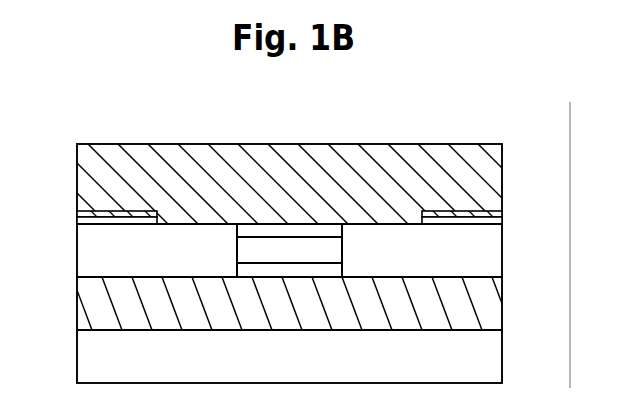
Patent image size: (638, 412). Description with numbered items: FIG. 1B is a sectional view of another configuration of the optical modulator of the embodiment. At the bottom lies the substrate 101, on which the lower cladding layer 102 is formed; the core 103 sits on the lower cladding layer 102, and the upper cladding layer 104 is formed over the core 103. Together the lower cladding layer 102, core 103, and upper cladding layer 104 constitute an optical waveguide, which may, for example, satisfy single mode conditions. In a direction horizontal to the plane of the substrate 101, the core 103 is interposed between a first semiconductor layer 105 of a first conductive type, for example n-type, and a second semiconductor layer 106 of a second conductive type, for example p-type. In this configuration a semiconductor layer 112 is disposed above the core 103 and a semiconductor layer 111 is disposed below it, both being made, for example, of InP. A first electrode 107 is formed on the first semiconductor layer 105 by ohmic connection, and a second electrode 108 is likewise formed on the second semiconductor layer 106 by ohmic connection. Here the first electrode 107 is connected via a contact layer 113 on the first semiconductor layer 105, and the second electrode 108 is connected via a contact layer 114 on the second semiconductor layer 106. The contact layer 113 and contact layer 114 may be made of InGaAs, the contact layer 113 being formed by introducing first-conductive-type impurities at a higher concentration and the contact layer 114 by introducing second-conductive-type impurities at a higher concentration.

The substrate 101 is at (503, 356).
The lower cladding layer 102 is at (503, 304).
The core 103 is at (288, 247).
The upper cladding layer 104 is at (503, 163).
The first semiconductor layer 105 is at (76, 258).
The second semiconductor layer 106 is at (503, 257).
The first electrode 107 is at (76, 213).
The second electrode 108 is at (503, 213).
The semiconductor layer 111 is at (243, 270).
The semiconductor layer 112 is at (331, 233).
The contact layer 113 is at (76, 224).
The contact layer 114 is at (503, 224).